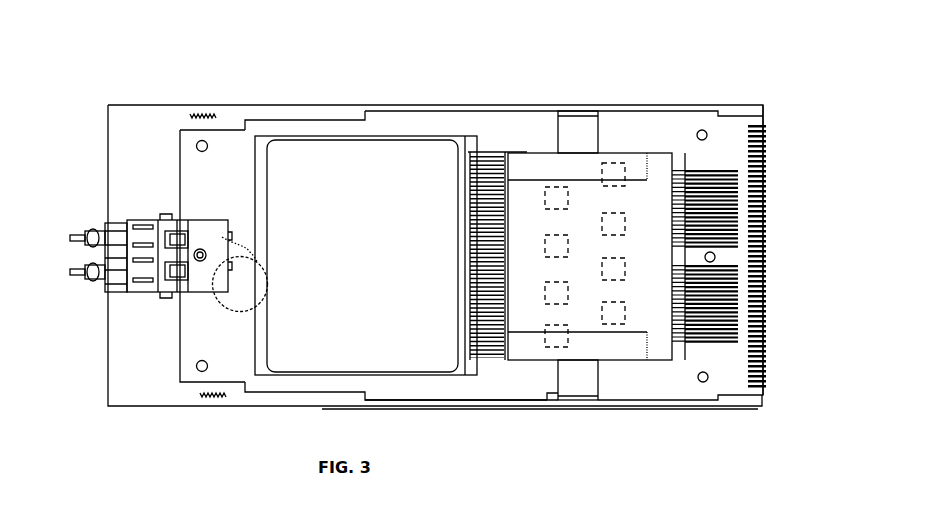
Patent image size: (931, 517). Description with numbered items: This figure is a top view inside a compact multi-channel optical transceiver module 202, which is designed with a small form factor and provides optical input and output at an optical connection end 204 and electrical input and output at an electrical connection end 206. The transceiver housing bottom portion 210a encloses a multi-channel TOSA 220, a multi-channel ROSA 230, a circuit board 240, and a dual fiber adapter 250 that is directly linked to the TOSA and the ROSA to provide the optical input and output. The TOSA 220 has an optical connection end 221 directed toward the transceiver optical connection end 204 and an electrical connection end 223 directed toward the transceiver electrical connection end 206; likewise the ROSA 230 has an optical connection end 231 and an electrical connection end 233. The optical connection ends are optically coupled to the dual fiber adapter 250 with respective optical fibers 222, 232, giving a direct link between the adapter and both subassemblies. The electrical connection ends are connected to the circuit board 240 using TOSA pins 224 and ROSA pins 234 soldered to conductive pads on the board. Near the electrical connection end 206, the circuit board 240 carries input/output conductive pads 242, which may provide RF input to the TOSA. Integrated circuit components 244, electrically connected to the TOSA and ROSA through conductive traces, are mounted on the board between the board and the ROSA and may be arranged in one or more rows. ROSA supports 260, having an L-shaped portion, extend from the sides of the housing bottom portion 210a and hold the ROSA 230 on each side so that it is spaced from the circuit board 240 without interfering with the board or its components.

The compact multi-channel optical transceiver module 202 is at (194, 60).
The optical connection end 204 is at (86, 127).
The electrical connection end 206 is at (778, 122).
The transceiver housing bottom portion 210a is at (168, 404).
The multi-channel TOSA 220 is at (435, 392).
The optical connection end of the TOSA 221 is at (253, 127).
The optical fiber 222 is at (247, 257).
The electrical connection end of the TOSA 223 is at (477, 123).
The TOSA pins 224 is at (492, 348).
The multi-channel ROSA 230 is at (658, 380).
The optical connection end of the ROSA 231 is at (497, 134).
The optical fiber 232 is at (472, 262).
The electrical connection end of the ROSA 233 is at (684, 133).
The ROSA pins 234 is at (710, 168).
The circuit board 240 is at (507, 412).
The input/output conductive pads 242 is at (766, 363).
The integrated circuit components 244 is at (552, 185).
The dual fiber adapter 250 is at (178, 218).
The ROSA supports 260 is at (586, 102).